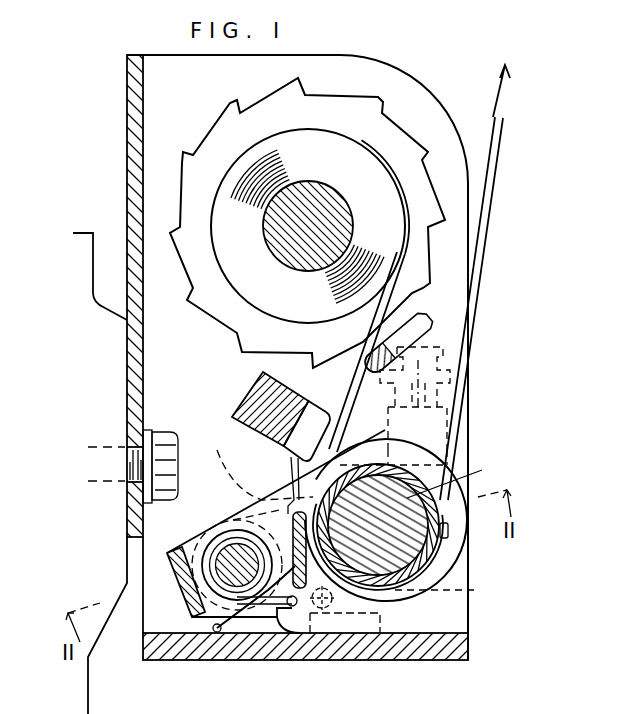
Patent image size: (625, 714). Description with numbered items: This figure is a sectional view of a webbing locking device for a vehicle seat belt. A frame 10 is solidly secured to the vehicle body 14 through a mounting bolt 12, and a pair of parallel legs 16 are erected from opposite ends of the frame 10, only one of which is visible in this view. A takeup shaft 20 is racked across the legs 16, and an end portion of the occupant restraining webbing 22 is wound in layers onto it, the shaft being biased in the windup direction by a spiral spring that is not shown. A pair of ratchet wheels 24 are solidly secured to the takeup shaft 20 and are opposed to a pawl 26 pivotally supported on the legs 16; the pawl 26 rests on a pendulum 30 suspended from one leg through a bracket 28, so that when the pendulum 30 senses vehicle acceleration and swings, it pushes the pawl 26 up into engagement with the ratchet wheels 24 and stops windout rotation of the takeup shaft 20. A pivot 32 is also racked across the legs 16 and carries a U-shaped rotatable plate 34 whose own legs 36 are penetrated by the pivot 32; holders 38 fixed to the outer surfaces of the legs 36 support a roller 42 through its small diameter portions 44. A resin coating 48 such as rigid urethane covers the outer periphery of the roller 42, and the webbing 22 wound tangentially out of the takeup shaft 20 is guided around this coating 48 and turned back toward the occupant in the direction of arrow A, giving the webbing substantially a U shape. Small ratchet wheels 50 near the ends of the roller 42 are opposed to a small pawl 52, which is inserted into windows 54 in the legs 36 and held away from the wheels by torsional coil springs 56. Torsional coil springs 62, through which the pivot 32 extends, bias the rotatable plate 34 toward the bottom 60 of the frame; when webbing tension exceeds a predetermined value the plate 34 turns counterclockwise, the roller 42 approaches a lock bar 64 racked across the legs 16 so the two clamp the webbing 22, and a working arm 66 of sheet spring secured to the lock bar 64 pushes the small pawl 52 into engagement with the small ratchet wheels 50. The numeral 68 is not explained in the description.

The frame 10 is at (127, 178).
The mounting bolt 12 is at (166, 432).
The vehicle body 14 is at (88, 683).
The legs 16 is at (468, 610).
The takeup shaft 20 is at (292, 240).
The occupant restraining webbing 22 is at (486, 216).
The ratchet wheels 24 is at (218, 300).
The pawl 26 is at (432, 325).
The bracket 28 is at (405, 382).
The pendulum 30 is at (447, 412).
The pivot 32 is at (225, 553).
The rotatable plate 34 is at (192, 598).
The legs 36 is at (386, 640).
The holders 38 is at (250, 476).
The roller 42 is at (420, 495).
The small diameter portions 44 is at (405, 603).
The coating 48 is at (445, 550).
The small ratchet wheels 50 is at (452, 596).
The small pawl 52 is at (296, 612).
The windows 54 is at (258, 510).
The torsional coil springs 56 is at (326, 610).
The bottom 60 is at (450, 648).
The torsional coil springs 62 is at (220, 634).
The lock bar 64 is at (300, 402).
The working arm 66 is at (290, 468).
The magnet keeper 68 is at (328, 440).
The arrow A is at (503, 100).